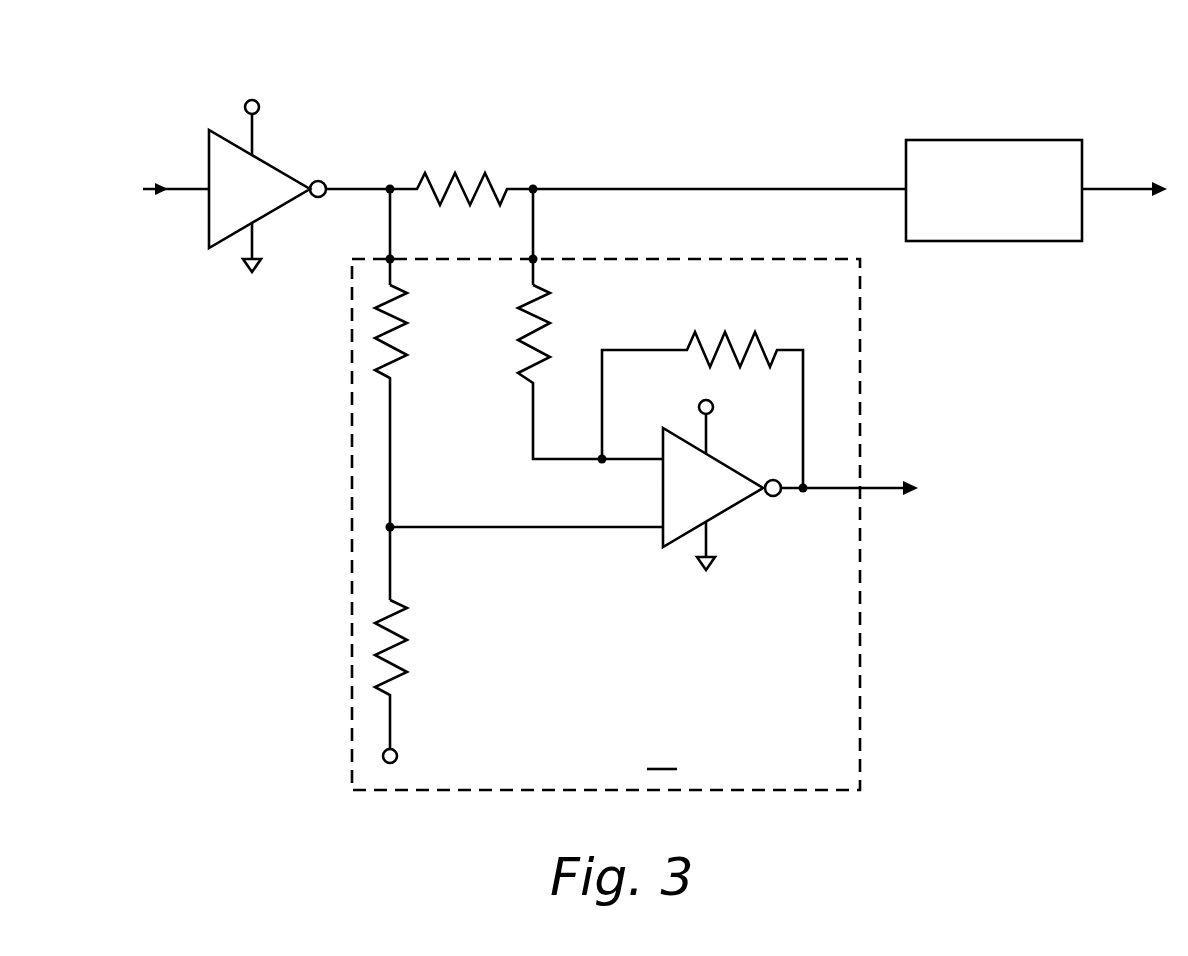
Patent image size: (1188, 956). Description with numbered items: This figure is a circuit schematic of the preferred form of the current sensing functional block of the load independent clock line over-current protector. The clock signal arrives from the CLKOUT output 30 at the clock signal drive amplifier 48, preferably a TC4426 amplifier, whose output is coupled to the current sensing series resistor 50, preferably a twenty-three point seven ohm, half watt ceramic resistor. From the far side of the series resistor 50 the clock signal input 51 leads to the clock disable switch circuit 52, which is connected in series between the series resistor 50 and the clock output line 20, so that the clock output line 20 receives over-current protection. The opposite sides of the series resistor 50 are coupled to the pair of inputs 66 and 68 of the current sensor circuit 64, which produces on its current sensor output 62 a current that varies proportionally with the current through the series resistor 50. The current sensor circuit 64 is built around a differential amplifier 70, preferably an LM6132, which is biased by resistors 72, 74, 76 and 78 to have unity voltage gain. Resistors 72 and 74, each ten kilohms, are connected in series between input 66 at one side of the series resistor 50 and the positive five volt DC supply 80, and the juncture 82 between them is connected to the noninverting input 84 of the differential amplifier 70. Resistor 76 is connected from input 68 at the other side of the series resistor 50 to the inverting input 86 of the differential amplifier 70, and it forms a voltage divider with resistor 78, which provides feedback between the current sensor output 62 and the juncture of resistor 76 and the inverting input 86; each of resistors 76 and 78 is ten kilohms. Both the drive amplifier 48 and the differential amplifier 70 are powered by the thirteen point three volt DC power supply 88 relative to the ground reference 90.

The clock output line 20 is at (1100, 187).
The CLKOUT output 30 is at (180, 187).
The clock signal drive amplifier 48 is at (207, 231).
The current sensing series resistor 50 is at (485, 175).
The clock signal input 51 is at (828, 188).
The clock disable switch circuit 52 is at (930, 140).
The current sensor output 62 is at (880, 487).
The current sensor circuit 64 is at (855, 334).
The input of current sensor circuit 66 is at (388, 258).
The input of current sensor circuit 68 is at (535, 258).
The differential amplifier 70 is at (733, 512).
The resistor 72 is at (395, 350).
The resistor 74 is at (398, 640).
The resistor 76 is at (525, 340).
The resistor 78 is at (755, 335).
The positive five volt DC supply 80 is at (383, 750).
The juncture 82 is at (393, 530).
The noninverting input 84 is at (570, 528).
The inverting input 86 is at (650, 457).
The 13.3 DC voltage power supply 88 is at (258, 100).
The ground reference 90 is at (263, 266).